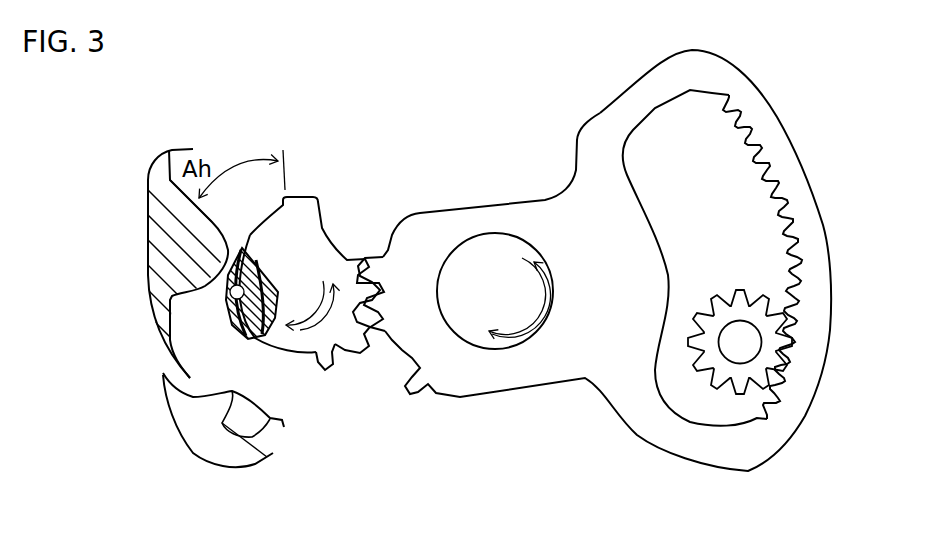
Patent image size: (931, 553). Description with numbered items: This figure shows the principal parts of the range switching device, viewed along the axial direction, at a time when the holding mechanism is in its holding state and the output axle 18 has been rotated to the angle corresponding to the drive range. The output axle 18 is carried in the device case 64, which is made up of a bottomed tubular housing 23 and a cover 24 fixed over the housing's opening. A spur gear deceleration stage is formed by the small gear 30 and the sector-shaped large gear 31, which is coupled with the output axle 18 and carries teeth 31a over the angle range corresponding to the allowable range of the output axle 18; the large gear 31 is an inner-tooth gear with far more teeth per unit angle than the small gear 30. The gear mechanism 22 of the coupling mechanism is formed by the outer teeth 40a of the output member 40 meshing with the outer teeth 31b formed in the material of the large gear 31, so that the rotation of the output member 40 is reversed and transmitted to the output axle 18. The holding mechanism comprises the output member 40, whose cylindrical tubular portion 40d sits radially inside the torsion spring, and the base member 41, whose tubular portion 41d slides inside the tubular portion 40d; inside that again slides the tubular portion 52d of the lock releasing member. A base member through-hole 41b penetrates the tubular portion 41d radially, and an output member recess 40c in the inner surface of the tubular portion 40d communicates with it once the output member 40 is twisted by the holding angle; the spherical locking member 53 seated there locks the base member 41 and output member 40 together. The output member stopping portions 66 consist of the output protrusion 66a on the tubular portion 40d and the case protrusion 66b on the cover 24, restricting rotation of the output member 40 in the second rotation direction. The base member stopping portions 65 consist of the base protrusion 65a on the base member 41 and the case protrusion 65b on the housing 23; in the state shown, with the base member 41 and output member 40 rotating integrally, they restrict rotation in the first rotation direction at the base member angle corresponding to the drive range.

The output axle 18 is at (488, 253).
The gear mechanism 22 is at (370, 240).
The housing 23 is at (161, 389).
The cover 24 is at (65, 232).
The small gear 30 is at (719, 373).
The large gear 31 is at (571, 114).
The teeth 31a is at (774, 187).
The outer teeth 31b is at (410, 395).
The output member 40 is at (263, 222).
The outer teeth 40a is at (328, 368).
The output member recess 40c is at (231, 302).
The tubular portion 40d is at (235, 305).
The base member 41 is at (274, 456).
The base member through-hole 41b is at (243, 248).
The tubular portion 41d is at (236, 298).
The tubular portion 52d is at (244, 333).
The locking member 53 is at (232, 293).
The device case 64 is at (145, 242).
The base member stopping portions 65 is at (217, 402).
The base protrusion 65a is at (300, 517).
The case protrusion 65b is at (133, 450).
The output member stopping portions 66 is at (147, 203).
The output protrusion 66a is at (297, 207).
The case protrusion 66b is at (78, 164).